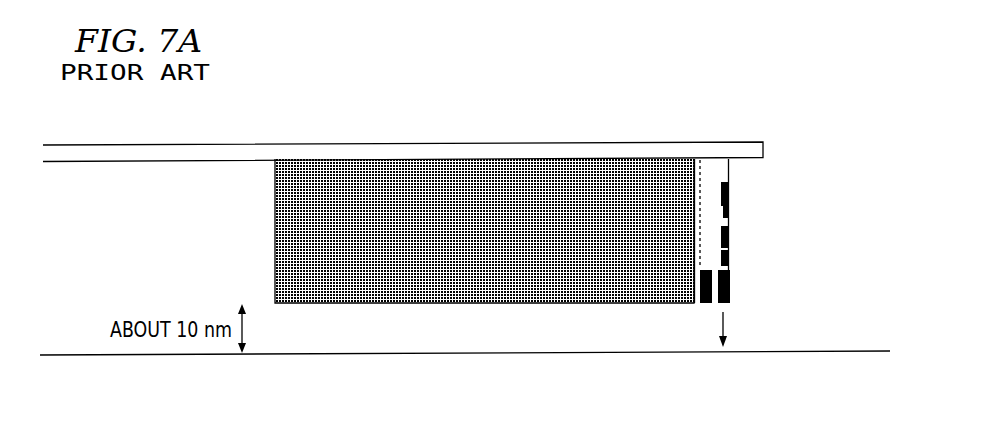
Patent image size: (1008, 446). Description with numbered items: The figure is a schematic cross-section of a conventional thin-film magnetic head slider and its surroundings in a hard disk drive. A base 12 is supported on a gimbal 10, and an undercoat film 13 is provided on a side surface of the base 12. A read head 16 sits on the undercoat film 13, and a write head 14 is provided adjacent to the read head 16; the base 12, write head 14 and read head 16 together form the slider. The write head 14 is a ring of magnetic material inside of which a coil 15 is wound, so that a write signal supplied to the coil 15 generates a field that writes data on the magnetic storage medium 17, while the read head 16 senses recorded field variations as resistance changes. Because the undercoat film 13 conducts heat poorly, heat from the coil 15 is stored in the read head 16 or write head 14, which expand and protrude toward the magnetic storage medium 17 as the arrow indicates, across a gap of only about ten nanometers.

The gimbal 10 is at (259, 144).
The base 12 is at (476, 303).
The undercoat film 13 is at (692, 305).
The write head 14 is at (730, 303).
The coil 15 is at (729, 192).
The read head 16 is at (710, 305).
The magnetic storage medium 17 is at (64, 370).